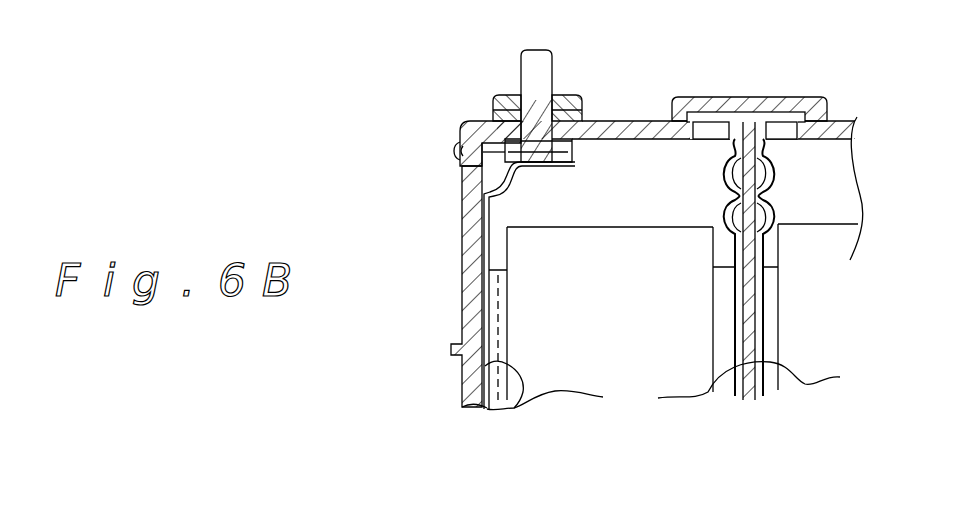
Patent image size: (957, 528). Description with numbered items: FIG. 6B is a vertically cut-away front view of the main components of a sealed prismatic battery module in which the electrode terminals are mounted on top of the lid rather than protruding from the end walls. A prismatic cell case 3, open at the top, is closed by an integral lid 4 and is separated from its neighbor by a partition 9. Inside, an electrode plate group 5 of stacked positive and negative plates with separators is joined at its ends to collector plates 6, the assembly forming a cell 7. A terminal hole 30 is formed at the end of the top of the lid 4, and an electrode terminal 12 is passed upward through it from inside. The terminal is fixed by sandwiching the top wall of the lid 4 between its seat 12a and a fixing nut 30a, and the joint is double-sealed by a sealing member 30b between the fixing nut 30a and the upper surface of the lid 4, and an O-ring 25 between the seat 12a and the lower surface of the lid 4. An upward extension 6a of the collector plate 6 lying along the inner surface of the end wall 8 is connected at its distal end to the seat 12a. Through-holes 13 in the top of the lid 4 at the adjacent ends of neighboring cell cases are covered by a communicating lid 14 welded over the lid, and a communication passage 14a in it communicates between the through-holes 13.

The cell case 3 is at (650, 212).
The lid 4 is at (640, 133).
The electrode plate group 5 is at (616, 342).
The collector plate 6 is at (517, 404).
The extension 6a is at (510, 182).
The cell 7 is at (578, 407).
The end wall 8 is at (468, 300).
The partition 9 is at (752, 387).
The electrode terminal 12 is at (533, 80).
The seat 12a is at (458, 172).
The through-hole 13 is at (710, 135).
The communicating lid 14 is at (733, 100).
The communication passage 14a is at (773, 115).
The O-ring 25 is at (570, 152).
The terminal hole 30 is at (470, 120).
The fixing nut 30a is at (569, 94).
The sealing member 30b is at (585, 118).